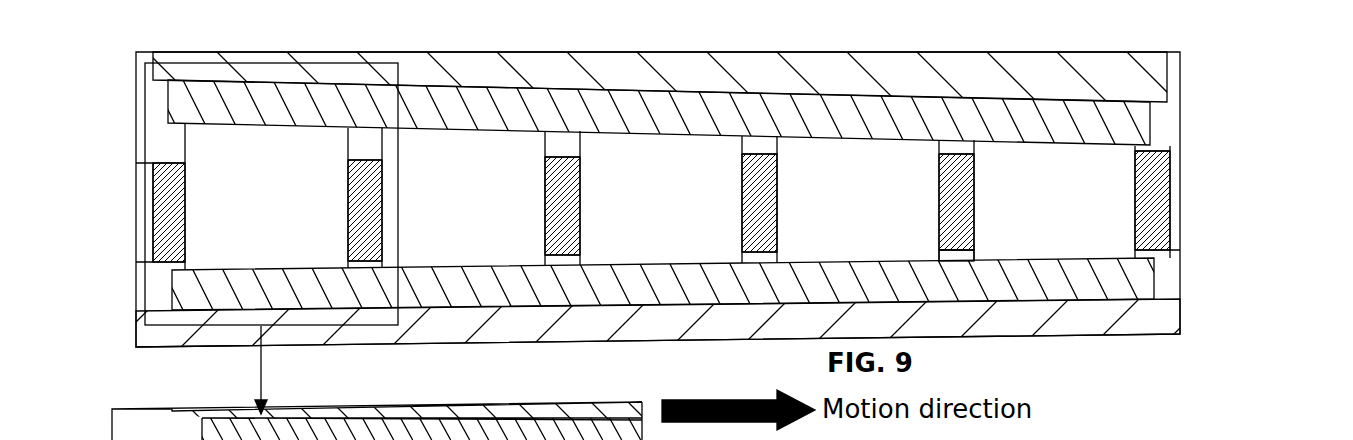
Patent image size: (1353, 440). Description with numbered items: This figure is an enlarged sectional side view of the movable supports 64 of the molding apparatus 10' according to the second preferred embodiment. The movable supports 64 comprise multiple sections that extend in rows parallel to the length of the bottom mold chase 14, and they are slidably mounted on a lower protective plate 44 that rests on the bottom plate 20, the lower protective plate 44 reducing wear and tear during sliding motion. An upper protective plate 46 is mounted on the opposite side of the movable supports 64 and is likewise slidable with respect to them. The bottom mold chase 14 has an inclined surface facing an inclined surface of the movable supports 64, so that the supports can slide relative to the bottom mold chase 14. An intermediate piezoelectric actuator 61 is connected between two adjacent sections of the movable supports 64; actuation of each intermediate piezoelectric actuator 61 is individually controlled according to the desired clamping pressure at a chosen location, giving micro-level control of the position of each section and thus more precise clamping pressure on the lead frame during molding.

The molding apparatus 10' is at (259, 187).
The bottom mold chase 14 is at (1208, 75).
The upper protective plate 46 is at (1158, 128).
The movable supports 64 is at (1108, 246).
The intermediate piezoelectric actuator 61 is at (966, 261).
The lower protective plate 44 is at (1160, 280).
The bottom plate 20 is at (1106, 326).